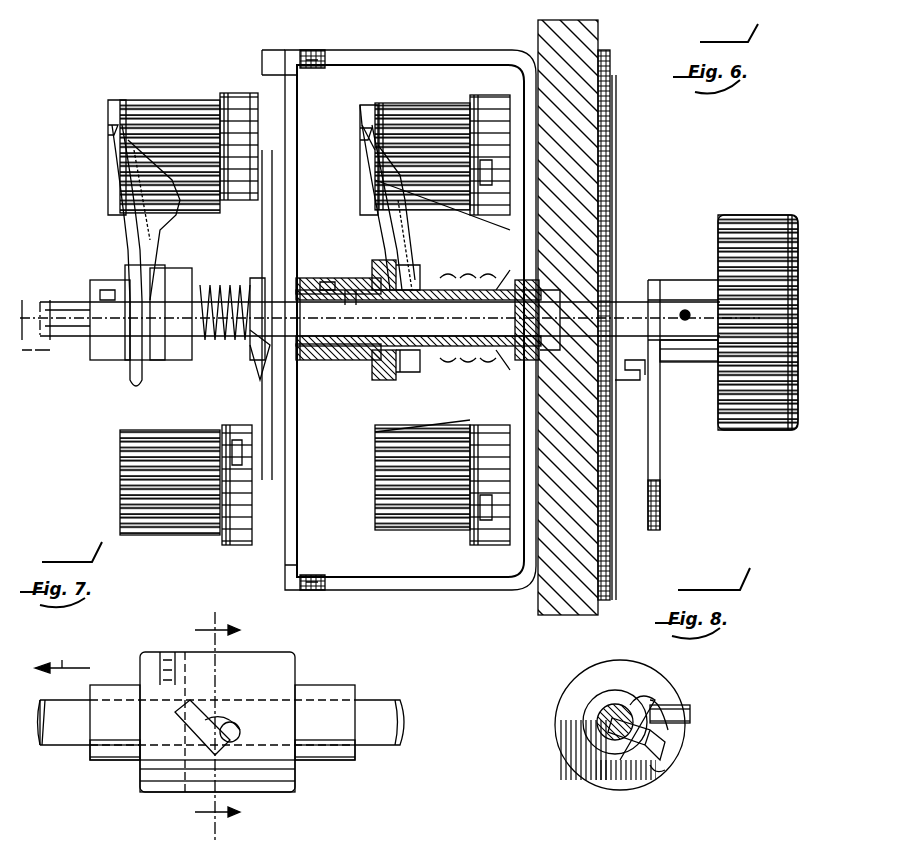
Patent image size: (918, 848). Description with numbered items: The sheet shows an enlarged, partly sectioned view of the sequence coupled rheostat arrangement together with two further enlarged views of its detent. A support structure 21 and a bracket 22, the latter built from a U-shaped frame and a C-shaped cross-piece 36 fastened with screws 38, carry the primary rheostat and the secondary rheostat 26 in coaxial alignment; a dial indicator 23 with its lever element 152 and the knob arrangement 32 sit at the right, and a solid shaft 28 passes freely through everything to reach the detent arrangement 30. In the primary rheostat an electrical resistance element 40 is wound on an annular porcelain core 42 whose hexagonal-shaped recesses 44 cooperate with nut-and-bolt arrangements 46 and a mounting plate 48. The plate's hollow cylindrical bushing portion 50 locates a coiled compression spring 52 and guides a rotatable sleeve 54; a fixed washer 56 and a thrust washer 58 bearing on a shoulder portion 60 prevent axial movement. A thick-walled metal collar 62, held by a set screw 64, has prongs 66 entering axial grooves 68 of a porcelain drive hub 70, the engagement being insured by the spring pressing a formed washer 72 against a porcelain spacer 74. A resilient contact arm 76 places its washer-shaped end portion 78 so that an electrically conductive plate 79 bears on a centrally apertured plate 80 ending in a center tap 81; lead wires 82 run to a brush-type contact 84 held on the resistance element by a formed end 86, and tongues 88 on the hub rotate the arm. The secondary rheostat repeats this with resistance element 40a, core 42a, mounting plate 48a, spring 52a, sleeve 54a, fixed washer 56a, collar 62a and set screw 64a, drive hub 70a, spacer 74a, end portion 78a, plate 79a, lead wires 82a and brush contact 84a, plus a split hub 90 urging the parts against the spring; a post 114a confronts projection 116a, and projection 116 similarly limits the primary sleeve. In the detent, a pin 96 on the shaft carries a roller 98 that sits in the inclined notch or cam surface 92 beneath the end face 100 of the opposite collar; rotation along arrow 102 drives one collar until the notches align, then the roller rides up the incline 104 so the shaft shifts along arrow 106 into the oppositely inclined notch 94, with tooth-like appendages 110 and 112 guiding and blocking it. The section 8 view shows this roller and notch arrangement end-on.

In FIG. 6, the support structure 21 is at (570, 38).
In FIG. 6, the bracket 22 is at (432, 600).
In FIG. 6, the dial indicator 23 is at (630, 538).
In FIG. 6, the secondary rheostat 26 is at (618, 190).
In FIG. 6, the solid shaft 28 is at (60, 300).
In FIG. 7, the solid shaft 28 is at (382, 750).
In FIG. 8, the solid shaft 28 is at (615, 725).
In FIG. 6, the detent arrangement 30 is at (349, 398).
In FIG. 7, the detent arrangement 30 is at (120, 790).
In FIG. 6, the knob arrangement 32 is at (752, 432).
In FIG. 6, the C-shaped cross-piece 36 is at (280, 70).
In FIG. 6, the screws 38 is at (312, 50).
In FIG. 6, the electrical resistance element 40 is at (410, 528).
In FIG. 6, the electrical resistance element 40a is at (190, 525).
In FIG. 6, the porcelain core 42 is at (505, 580).
In FIG. 6, the porcelain core 42a is at (237, 548).
In FIG. 6, the hexagonal-shaped recesses 44 is at (488, 160).
In FIG. 6, the nut-and-bolt arrangements 46 is at (603, 130).
In FIG. 6, the mounting plate 48 is at (614, 180).
In FIG. 6, the mounting plate 48a is at (265, 235).
In FIG. 6, the hollow cylindrical bushing portion 50 is at (488, 285).
In FIG. 6, the coiled compression spring 52 is at (468, 275).
In FIG. 6, the spring 52a is at (215, 300).
In FIG. 6, the hollow shaft or sleeve 54 is at (598, 285).
In FIG. 7, the hollow shaft or sleeve 54 is at (335, 690).
In FIG. 8, the hollow shaft or sleeve 54 is at (602, 740).
In FIG. 6, the sleeve 54a is at (305, 360).
In FIG. 7, the sleeve 54a is at (108, 762).
In FIG. 6, the fixed washer 56 is at (540, 360).
In FIG. 6, the fixed washer 56a is at (258, 360).
In FIG. 6, the thrust washer 58 is at (598, 240).
In FIG. 6, the shoulder portion 60 is at (462, 362).
In FIG. 6, the thick-walled metal collar 62 is at (345, 385).
In FIG. 7, the thick-walled metal collar 62 is at (290, 650).
In FIG. 8, the thick-walled metal collar 62 is at (660, 790).
In FIG. 7, the metal collar 62a is at (55, 660).
In FIG. 6, the set screw 64 is at (348, 262).
In FIG. 7, the set screw 64 is at (275, 800).
In FIG. 7, the set screw 64a is at (135, 665).
In FIG. 6, the prongs 66 is at (358, 390).
In FIG. 6, the axial grooves 68 is at (405, 378).
In FIG. 6, the porcelain drive hub 70 is at (368, 250).
In FIG. 6, the porcelain drive hub 70a is at (114, 374).
In FIG. 6, the formed washer 72 is at (452, 262).
In FIG. 6, the porcelain spacer 74 is at (428, 262).
In FIG. 6, the porcelain spacer 74a is at (172, 270).
In FIG. 6, the resilient contact arm 76 is at (346, 150).
In FIG. 6, the washer-shaped end portion 78 is at (398, 385).
In FIG. 6, the washer-shaped end portion 78a is at (130, 390).
In FIG. 6, the electrically conductive plate 79 is at (416, 275).
In FIG. 6, the electrically conductive plate 79a is at (140, 217).
In FIG. 6, the centrally apertured plate 80 is at (410, 262).
In FIG. 6, the center tap 81 is at (380, 200).
In FIG. 6, the lead wires 82 is at (370, 185).
In FIG. 6, the lead wires 82a is at (125, 200).
In FIG. 6, the brush-type contact 84 is at (360, 115).
In FIG. 6, the brush-type contact 84a is at (120, 112).
In FIG. 6, the formed end 86 is at (365, 110).
In FIG. 6, the tongues 88 is at (378, 370).
In FIG. 6, the split hub 90 is at (90, 350).
In FIG. 8, the inclined notch or cam surface 92 is at (690, 710).
In FIG. 7, the notch or cam surface 94 is at (206, 684).
In FIG. 8, the pin 96 is at (640, 660).
In FIG. 6, the roller 98 is at (345, 280).
In FIG. 7, the roller 98 is at (290, 660).
In FIG. 8, the roller 98 is at (690, 725).
In FIG. 7, the end face 100 is at (225, 655).
In FIG. 7, the arrow 102 is at (395, 725).
In FIG. 7, the incline 104 is at (280, 680).
In FIG. 7, the arrow 106 is at (59, 653).
In FIG. 8, the tooth-like appendage 110 is at (660, 770).
In FIG. 7, the tooth-like appendage 112 is at (170, 650).
In FIG. 6, the post 114a is at (235, 330).
In FIG. 6, the projection 116 is at (505, 365).
In FIG. 6, the projection 116a is at (258, 380).
In FIG. 6, the lever element 152 is at (625, 385).
In FIG. 7, the section line 8 is at (207, 714).